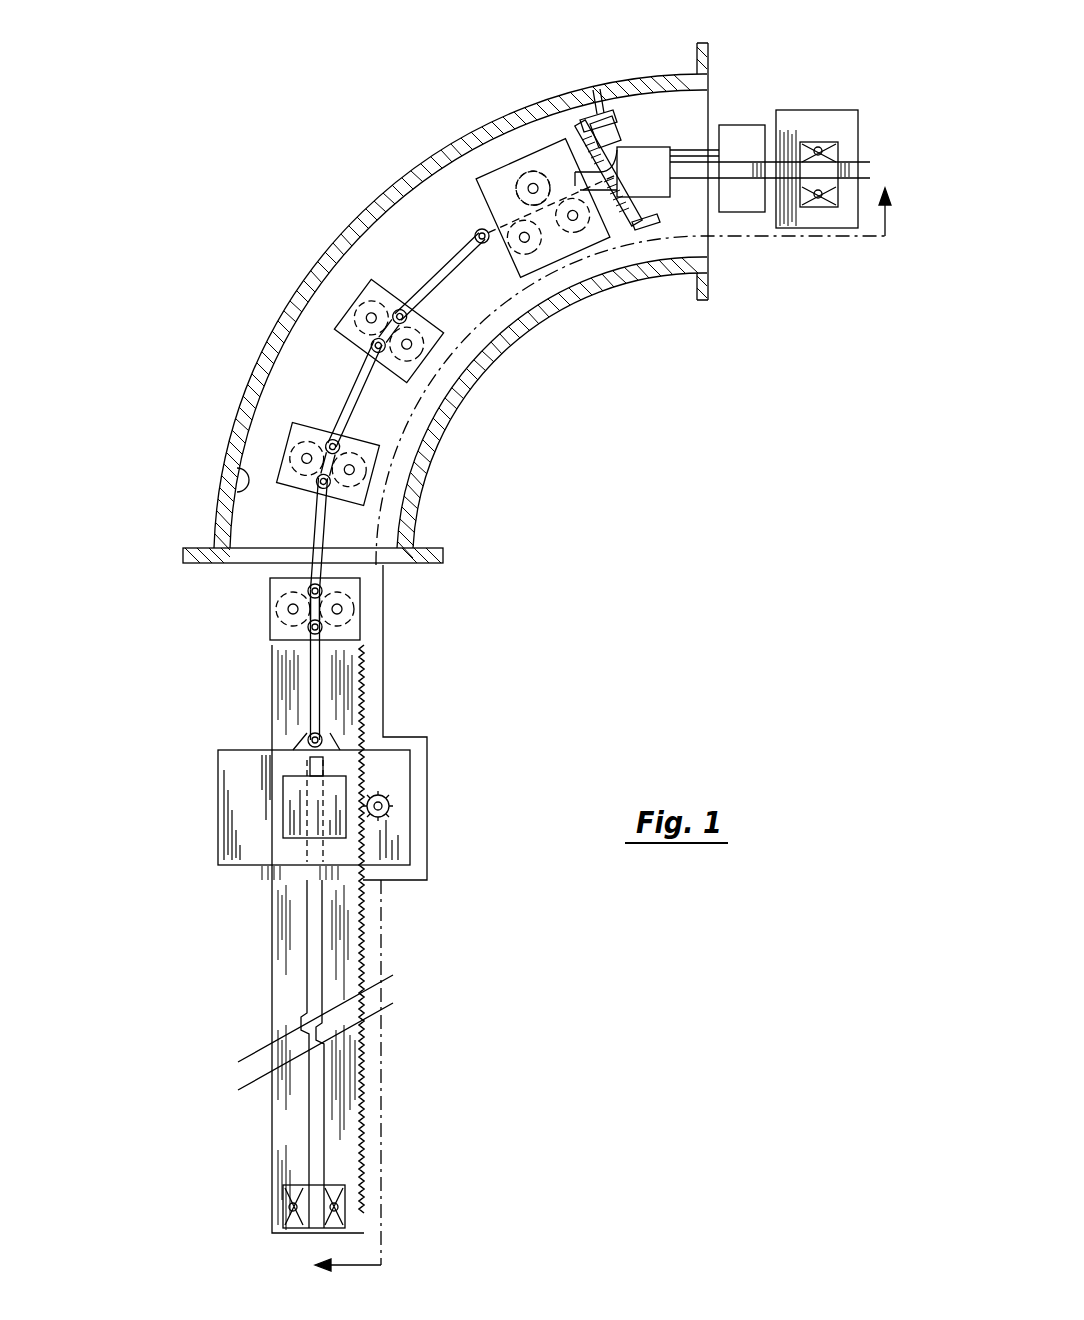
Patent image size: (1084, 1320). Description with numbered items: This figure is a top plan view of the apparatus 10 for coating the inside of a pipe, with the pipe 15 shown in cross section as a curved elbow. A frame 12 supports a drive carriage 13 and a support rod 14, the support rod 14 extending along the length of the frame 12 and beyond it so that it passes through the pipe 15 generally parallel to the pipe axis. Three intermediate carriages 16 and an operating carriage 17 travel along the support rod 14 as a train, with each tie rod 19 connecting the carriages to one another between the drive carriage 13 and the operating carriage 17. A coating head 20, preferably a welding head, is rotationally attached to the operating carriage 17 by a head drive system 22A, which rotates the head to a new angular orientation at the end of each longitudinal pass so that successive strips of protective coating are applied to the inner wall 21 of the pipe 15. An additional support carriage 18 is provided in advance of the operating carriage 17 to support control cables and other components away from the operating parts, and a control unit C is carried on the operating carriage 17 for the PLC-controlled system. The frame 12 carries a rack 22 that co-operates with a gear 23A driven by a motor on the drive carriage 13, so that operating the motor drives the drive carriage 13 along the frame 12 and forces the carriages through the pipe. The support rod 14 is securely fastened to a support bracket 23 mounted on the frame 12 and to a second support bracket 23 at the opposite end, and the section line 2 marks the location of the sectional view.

The apparatus 10 is at (196, 646).
The frame 12 is at (272, 1123).
The drive carriage 13 is at (218, 798).
The support rod 14 is at (312, 967).
The pipe 15 is at (270, 338).
The intermediate carriages 16 is at (358, 298).
The operating carriage 17 is at (497, 187).
The support carriage 18 is at (727, 138).
The tie rod 19 is at (440, 288).
The coating head 20 is at (615, 132).
The inner wall 21 is at (225, 487).
The rack 22 is at (365, 1170).
The head drive system 22A is at (533, 170).
The support bracket 23 is at (838, 215).
The gear 23A is at (392, 803).
The control unit C is at (550, 283).
The section line 2- 2 is at (603, 736).